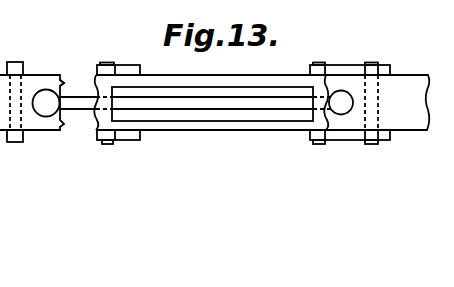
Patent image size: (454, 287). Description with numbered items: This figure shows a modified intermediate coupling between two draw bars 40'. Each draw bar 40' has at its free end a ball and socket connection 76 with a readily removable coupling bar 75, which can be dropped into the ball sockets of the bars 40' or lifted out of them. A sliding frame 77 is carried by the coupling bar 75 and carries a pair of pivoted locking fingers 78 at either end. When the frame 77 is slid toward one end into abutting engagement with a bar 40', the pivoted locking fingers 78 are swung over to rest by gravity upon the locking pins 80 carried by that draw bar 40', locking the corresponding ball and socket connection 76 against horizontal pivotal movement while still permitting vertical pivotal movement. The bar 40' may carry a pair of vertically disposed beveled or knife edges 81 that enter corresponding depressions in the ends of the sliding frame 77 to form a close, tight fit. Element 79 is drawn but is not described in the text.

The draw bar 40' is at (216, 91).
The coupling bar 75 is at (88, 102).
The ball and socket connection 76 is at (50, 110).
The sliding frame 77 is at (263, 80).
The pivoted locking finger 78 is at (133, 138).
The bolt 79 is at (308, 143).
The locking pin 80 is at (15, 142).
The knife edge 81 is at (61, 82).